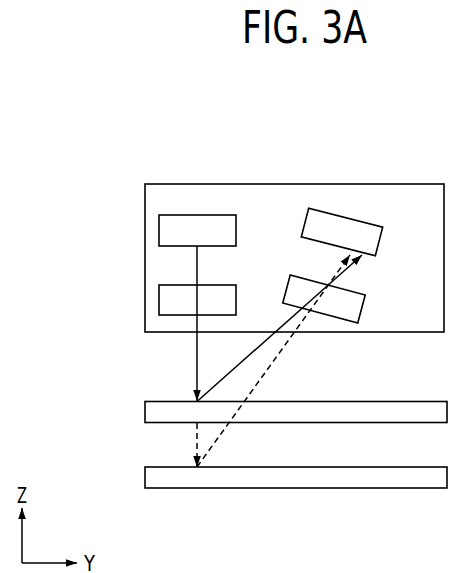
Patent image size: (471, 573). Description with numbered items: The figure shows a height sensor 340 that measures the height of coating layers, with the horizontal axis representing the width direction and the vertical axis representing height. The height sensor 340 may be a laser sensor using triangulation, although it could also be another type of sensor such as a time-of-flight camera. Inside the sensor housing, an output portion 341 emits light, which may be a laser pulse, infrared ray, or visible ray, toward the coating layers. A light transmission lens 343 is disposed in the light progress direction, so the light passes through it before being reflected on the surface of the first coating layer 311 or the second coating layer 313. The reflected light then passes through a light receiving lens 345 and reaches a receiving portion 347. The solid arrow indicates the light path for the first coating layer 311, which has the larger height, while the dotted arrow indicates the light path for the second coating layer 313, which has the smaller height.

The height sensor 340 is at (338, 175).
The output portion 341 is at (159, 231).
The light transmission lens 343 is at (159, 300).
The light receiving lens 345 is at (366, 303).
The receiving portion 347 is at (380, 238).
The first coating layer 311 is at (145, 412).
The second coating layer 313 is at (145, 477).